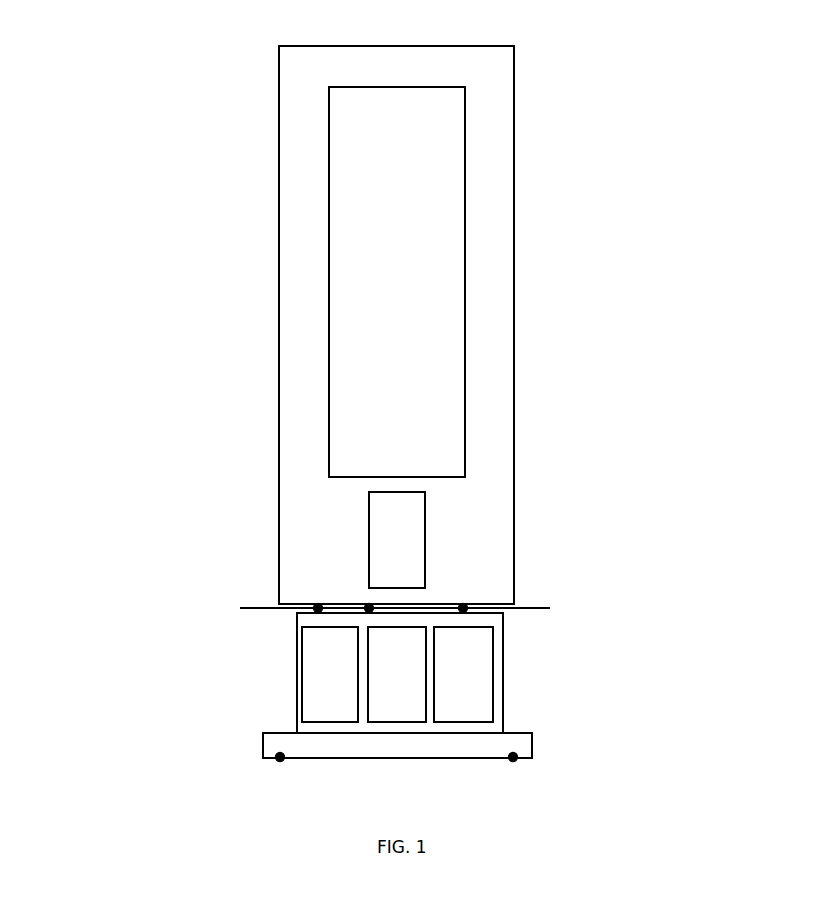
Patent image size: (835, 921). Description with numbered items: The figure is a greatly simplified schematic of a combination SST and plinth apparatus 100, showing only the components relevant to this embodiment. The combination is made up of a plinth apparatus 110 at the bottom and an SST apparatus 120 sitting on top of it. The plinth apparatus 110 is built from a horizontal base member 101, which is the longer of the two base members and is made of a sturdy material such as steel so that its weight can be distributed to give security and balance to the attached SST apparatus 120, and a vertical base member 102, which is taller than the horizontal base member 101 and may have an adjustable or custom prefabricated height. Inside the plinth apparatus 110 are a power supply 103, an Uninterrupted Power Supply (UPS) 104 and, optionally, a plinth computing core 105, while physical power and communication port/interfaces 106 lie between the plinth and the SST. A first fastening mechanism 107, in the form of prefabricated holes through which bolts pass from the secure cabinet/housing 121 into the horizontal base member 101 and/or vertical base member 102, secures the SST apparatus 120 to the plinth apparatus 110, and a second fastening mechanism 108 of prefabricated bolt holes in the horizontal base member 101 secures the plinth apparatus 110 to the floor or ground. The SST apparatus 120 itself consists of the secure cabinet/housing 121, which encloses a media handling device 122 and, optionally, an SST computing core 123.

The combination SST and plinth apparatus 100 is at (650, 68).
The horizontal base member 101 is at (529, 746).
The vertical base member 102 is at (291, 639).
The power supply 103 is at (302, 674).
The Uninterrupted Power Supply (UPS) 104 is at (423, 646).
The plinth computing core 105 is at (489, 674).
The physical power and communication port/interfaces 106 is at (373, 605).
The first fastening mechanism 107 is at (455, 615).
The second fastening mechanism 108 is at (280, 757).
The plinth apparatus 110 is at (653, 616).
The SST apparatus 120 is at (238, 60).
The secure cabinet/housing 121 is at (512, 345).
The media handling device 122 is at (463, 238).
The SST computing core 123 is at (425, 542).